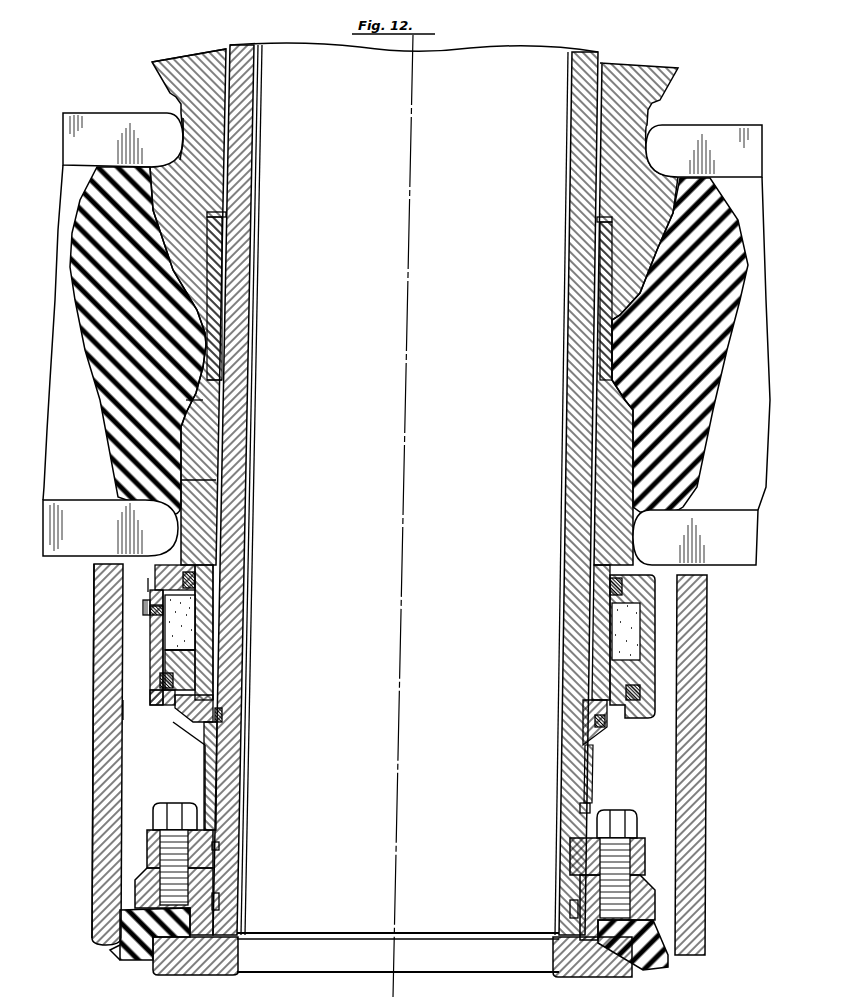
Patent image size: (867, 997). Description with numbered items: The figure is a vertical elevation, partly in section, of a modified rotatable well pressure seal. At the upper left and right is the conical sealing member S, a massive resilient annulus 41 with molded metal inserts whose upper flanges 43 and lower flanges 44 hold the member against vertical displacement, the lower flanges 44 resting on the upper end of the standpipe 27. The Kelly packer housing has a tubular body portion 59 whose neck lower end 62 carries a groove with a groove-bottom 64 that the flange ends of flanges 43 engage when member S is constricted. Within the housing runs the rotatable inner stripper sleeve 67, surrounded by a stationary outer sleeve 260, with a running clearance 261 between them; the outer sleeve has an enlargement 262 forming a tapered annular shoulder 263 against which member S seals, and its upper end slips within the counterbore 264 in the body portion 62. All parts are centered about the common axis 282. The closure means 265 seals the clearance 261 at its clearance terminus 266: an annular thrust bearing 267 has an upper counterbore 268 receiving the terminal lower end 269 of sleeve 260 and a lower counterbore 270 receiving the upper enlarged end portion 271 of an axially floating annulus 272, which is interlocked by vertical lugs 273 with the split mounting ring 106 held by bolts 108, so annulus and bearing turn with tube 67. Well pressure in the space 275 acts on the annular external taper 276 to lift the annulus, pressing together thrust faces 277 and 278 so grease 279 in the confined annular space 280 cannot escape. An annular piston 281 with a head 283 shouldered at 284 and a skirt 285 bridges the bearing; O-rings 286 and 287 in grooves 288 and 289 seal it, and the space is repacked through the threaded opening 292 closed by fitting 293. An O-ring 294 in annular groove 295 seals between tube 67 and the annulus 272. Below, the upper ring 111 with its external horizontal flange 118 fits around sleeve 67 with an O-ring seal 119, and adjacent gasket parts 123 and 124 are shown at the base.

The standpipe 27 is at (95, 820).
The annulus 41 is at (108, 420).
The upper plates or flanges 43 is at (104, 126).
The lower plates or flanges 44 is at (55, 510).
The tubular body portion 59 is at (150, 64).
The lower end of neck portion 62 is at (210, 190).
The groove-bottom 64 is at (180, 140).
The inner stripper sleeve 67 is at (237, 416).
The split mounting ring 106 is at (205, 858).
The bolts 108 is at (185, 885).
The upper ring 111 is at (160, 972).
The external horizontal flange 118 is at (140, 883).
The O-ring seal 119 is at (219, 902).
The gasket lip 123 is at (118, 955).
The gasket 124 is at (125, 926).
The outer sleeve 260 is at (212, 380).
The running clearance 261 is at (220, 444).
The enlargement 262 is at (195, 480).
The tapered annular shoulder 263 is at (195, 400).
The counterbore 264 is at (213, 252).
The closure means 265 is at (93, 752).
The clearance terminus 266 is at (150, 650).
The annular thrust bearing 267 is at (128, 720).
The upper counterbore 268 is at (200, 660).
The terminal lower end 269 is at (200, 645).
The lower counterbore 270 is at (215, 735).
The upper enlarged end portion 271 is at (200, 704).
The floating annulus 272 is at (205, 778).
The vertical lugs 273 is at (205, 820).
The space 275 is at (165, 760).
The annular external taper 276 is at (190, 742).
The thrust face 277 is at (215, 682).
The thrust face 278 is at (160, 670).
The grease 279 is at (192, 647).
The confined annular space 280 is at (190, 618).
The annular piston 281 is at (143, 583).
The common axis 282 is at (401, 645).
The head 283 is at (148, 608).
The shoulder 284 is at (185, 565).
The skirt 285 is at (150, 635).
The O-ring 286 is at (195, 582).
The O-ring 287 is at (155, 688).
The groove 288 is at (205, 600).
The groove 289 is at (165, 704).
The threaded opening 292 is at (143, 612).
The fitting 293 is at (150, 622).
The O-ring 294 is at (220, 712).
The annular groove 295 is at (583, 728).
The conical sealing member S is at (100, 330).